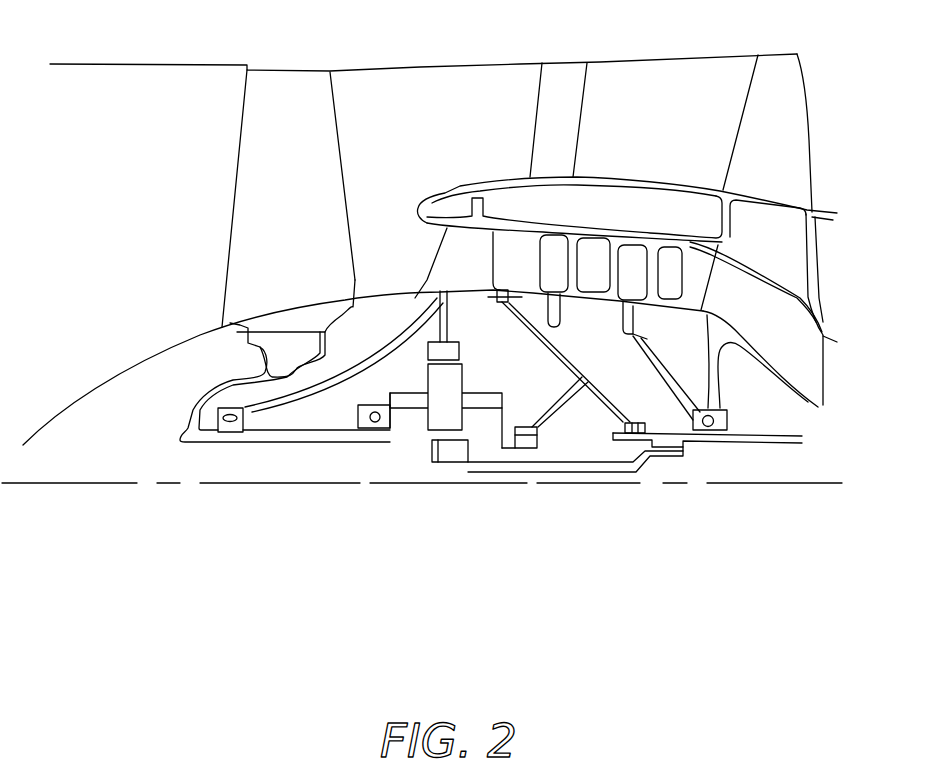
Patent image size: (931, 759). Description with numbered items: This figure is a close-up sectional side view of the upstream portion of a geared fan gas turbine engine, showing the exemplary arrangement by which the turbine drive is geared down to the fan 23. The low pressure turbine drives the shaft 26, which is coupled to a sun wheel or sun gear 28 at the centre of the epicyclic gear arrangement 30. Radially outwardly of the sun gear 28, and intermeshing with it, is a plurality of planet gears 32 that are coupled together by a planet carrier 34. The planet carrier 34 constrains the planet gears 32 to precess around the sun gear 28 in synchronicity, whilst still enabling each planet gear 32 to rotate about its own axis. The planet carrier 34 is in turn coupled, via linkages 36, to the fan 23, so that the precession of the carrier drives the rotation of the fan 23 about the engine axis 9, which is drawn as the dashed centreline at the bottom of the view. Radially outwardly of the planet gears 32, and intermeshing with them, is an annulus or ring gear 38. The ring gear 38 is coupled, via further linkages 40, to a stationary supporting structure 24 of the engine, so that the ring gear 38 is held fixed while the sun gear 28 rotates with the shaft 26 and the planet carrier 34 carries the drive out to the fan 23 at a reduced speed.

The engine axis 9 is at (118, 484).
The fan 23 is at (263, 199).
The stationary supporting structure 24 is at (453, 251).
The shaft 26 is at (572, 464).
The sun gear 28 is at (450, 453).
The epicyclic gear arrangement 30 is at (416, 431).
The planet gears 32 is at (438, 423).
The planet carrier 34 is at (495, 405).
The linkages 36 is at (408, 428).
The ring gear 38 is at (452, 352).
The linkages 40 is at (452, 322).